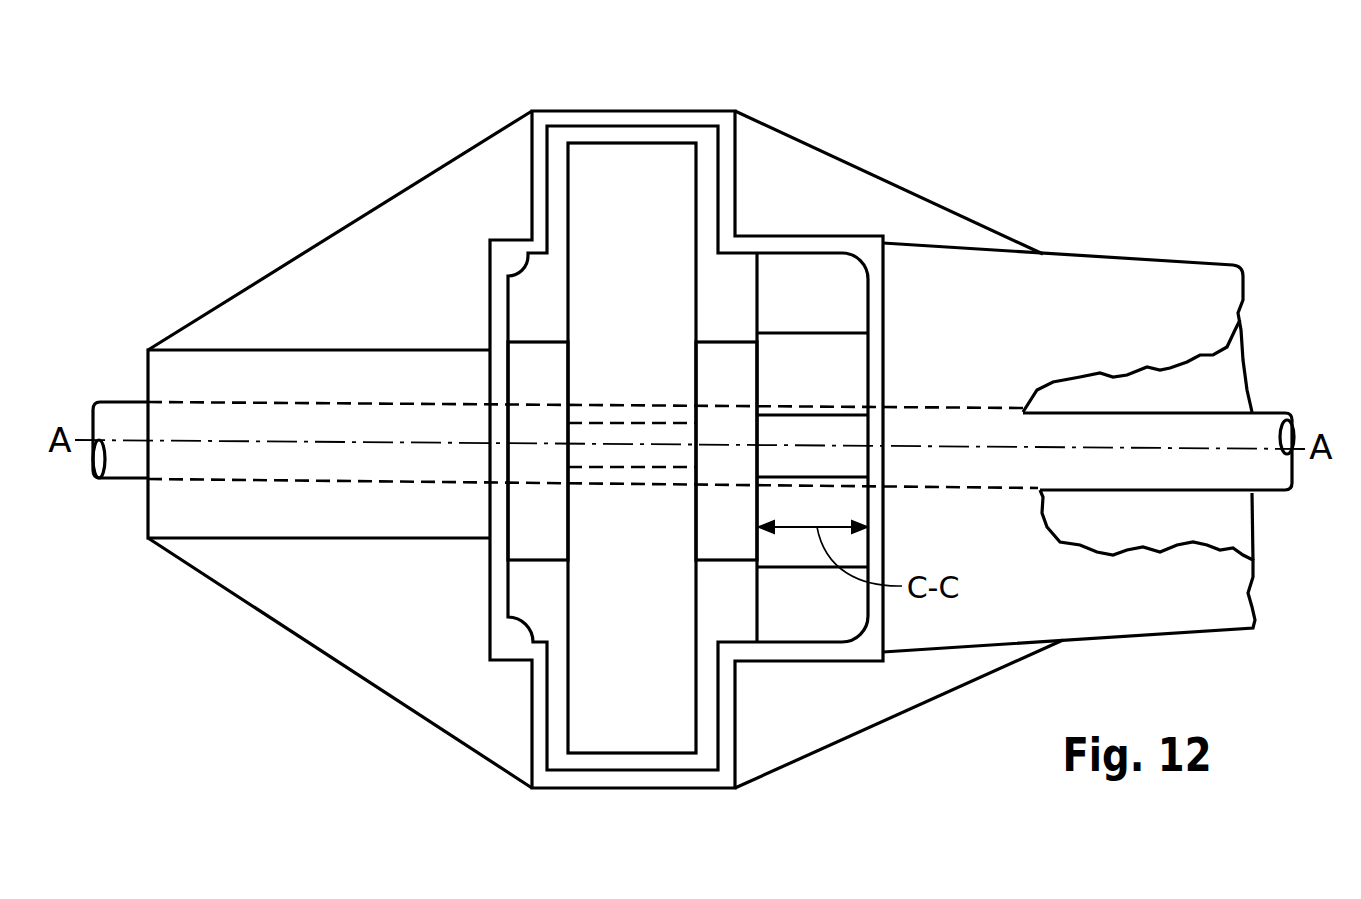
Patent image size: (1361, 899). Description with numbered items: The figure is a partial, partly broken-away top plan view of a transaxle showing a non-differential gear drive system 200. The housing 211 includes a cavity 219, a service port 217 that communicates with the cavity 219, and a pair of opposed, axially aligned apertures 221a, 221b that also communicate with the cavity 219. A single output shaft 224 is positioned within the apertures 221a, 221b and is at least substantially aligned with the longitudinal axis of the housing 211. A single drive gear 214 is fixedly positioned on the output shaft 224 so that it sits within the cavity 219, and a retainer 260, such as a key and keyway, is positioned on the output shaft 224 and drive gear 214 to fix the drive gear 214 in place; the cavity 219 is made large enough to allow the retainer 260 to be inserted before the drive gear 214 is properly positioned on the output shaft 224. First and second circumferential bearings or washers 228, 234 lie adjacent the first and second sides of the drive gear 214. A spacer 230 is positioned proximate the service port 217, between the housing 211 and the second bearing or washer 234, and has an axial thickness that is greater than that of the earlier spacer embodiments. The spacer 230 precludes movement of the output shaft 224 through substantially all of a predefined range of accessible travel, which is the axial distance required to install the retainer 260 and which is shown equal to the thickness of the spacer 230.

The non-differential gear drive system 200 is at (358, 728).
The housing 211 is at (1092, 257).
The drive gear 214 is at (678, 143).
The service port 217 is at (653, 773).
The cavity 219 is at (710, 140).
The aperture 221a is at (496, 492).
The aperture 221b is at (884, 494).
The output shaft 224 is at (112, 402).
The first circumferential bearing or washer 228 is at (526, 342).
The spacer 230 is at (812, 628).
The second circumferential bearing or washer 234 is at (723, 338).
The retainer 260 is at (603, 467).